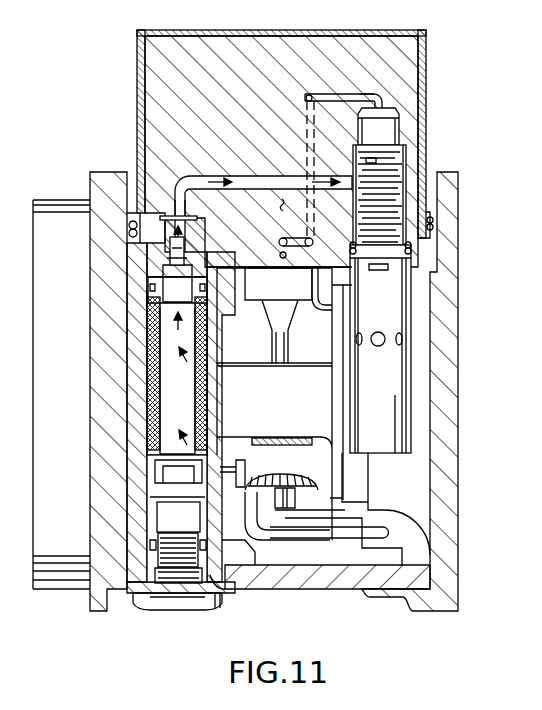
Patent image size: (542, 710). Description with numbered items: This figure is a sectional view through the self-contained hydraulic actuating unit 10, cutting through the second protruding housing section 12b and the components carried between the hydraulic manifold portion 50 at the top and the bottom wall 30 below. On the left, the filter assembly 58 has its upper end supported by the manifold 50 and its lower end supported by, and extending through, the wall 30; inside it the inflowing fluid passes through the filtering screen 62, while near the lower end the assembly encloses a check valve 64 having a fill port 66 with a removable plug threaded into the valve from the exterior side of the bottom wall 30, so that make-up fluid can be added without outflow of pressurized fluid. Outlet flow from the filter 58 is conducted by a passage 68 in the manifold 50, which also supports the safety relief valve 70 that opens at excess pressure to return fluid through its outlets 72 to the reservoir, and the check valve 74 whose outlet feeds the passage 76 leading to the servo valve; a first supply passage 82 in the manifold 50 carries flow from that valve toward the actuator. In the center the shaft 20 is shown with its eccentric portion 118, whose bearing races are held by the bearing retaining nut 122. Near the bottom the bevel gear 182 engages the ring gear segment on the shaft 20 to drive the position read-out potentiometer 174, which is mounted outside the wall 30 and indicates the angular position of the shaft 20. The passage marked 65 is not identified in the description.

The hydraulic actuating unit 10 is at (82, 135).
The second protruding housing section 12b is at (433, 90).
The shaft 20 is at (252, 351).
The bottom wall 30 is at (368, 595).
The hydraulic manifold portion 50 is at (376, 94).
The filter assembly 58 is at (231, 421).
The screen 62 is at (155, 408).
The check valve 64 is at (185, 527).
The fuel passage 65 is at (255, 176).
The fill port 66 is at (182, 609).
The passage 68 is at (172, 198).
The safety relief valve 70 is at (388, 224).
The outlets 72 is at (377, 347).
The check valve 74 is at (378, 126).
The passage 76 is at (349, 94).
The first supply passage 82 is at (280, 255).
The eccentric portion 118 is at (289, 416).
The bearing retaining nut 122 is at (275, 447).
The position read-out potentiometer 174 is at (306, 589).
The bevel gear 182 is at (292, 490).